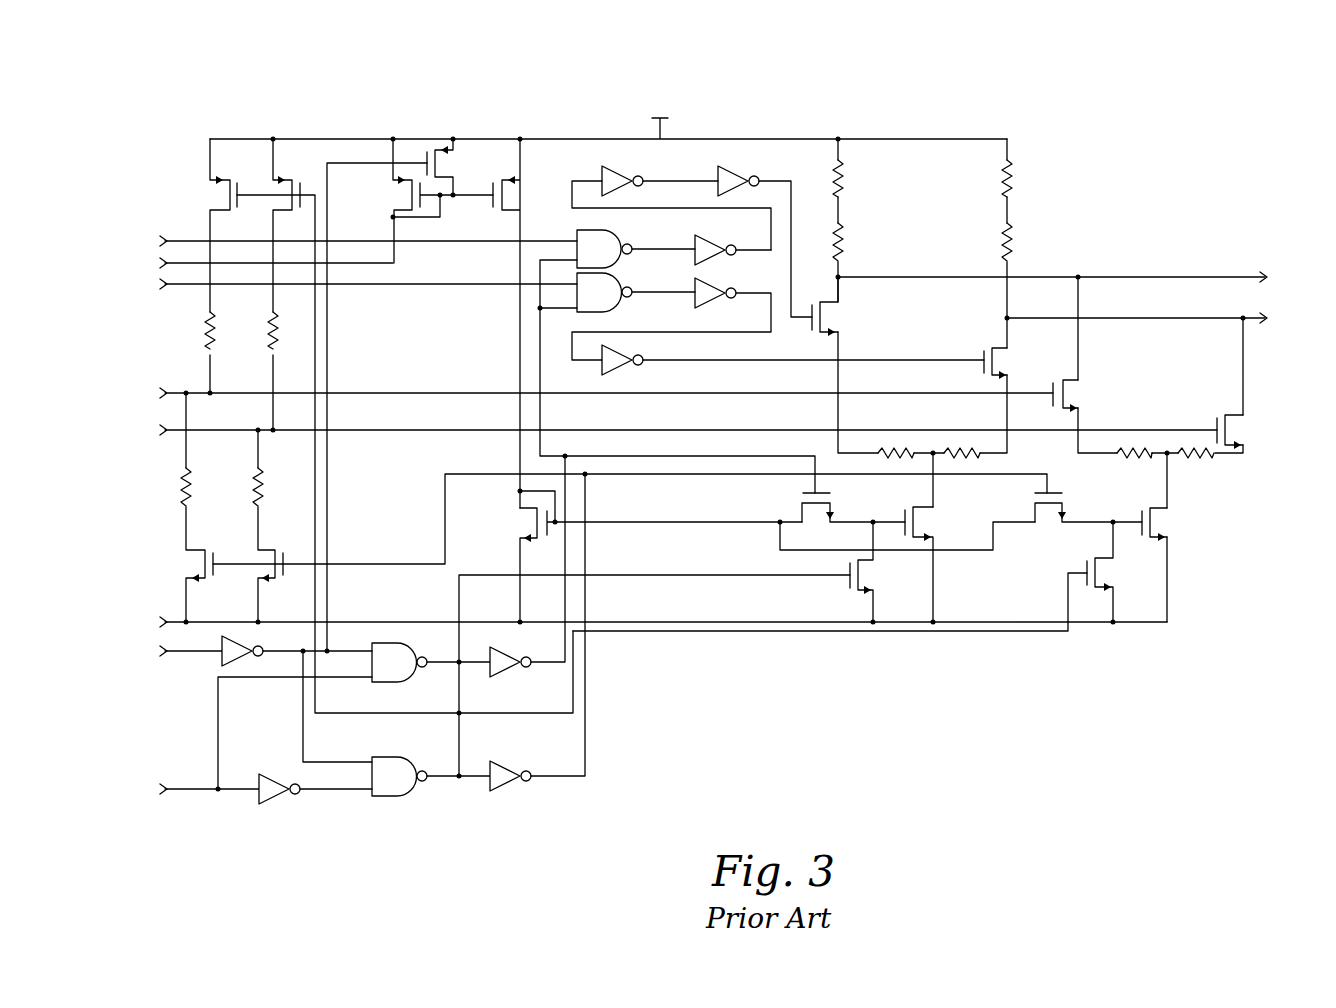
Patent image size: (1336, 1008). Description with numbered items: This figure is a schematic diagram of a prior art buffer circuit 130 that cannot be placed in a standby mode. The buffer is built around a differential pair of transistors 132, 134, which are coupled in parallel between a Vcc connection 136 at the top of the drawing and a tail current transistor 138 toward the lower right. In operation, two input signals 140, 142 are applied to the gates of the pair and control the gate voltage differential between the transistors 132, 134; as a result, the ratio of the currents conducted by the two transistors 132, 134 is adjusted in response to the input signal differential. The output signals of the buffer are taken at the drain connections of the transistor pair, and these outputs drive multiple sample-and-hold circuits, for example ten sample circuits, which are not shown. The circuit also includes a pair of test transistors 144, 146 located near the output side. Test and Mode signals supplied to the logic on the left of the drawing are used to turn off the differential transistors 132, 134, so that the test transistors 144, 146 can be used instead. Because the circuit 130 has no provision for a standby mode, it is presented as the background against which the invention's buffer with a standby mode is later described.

The buffer circuit 130 is at (1126, 108).
The Vcc connection 136 is at (753, 138).
The test transistor 144 is at (838, 320).
The test transistor 146 is at (981, 346).
The transistor 132 is at (1088, 394).
The transistor 134 is at (1242, 437).
The tail current transistor 138 is at (1165, 524).
The input signal 140 is at (165, 393).
The input signal 142 is at (165, 430).